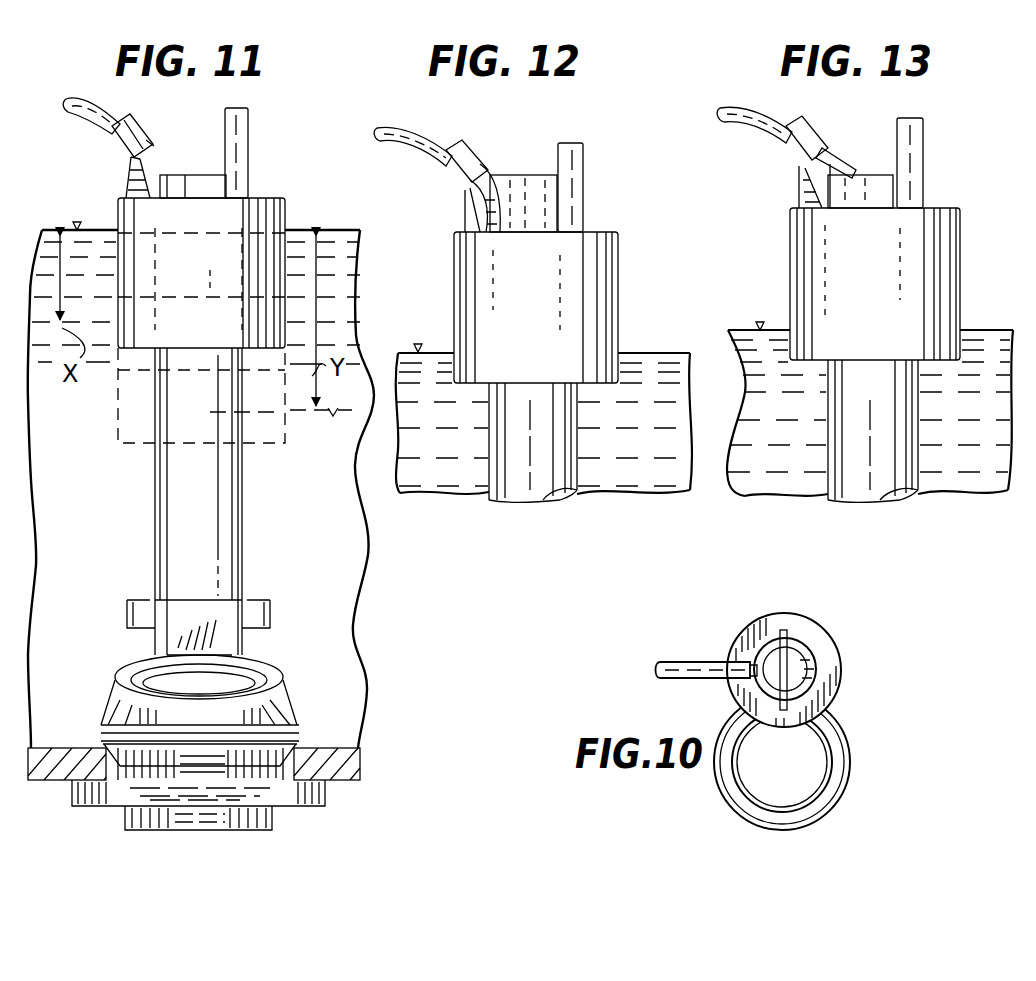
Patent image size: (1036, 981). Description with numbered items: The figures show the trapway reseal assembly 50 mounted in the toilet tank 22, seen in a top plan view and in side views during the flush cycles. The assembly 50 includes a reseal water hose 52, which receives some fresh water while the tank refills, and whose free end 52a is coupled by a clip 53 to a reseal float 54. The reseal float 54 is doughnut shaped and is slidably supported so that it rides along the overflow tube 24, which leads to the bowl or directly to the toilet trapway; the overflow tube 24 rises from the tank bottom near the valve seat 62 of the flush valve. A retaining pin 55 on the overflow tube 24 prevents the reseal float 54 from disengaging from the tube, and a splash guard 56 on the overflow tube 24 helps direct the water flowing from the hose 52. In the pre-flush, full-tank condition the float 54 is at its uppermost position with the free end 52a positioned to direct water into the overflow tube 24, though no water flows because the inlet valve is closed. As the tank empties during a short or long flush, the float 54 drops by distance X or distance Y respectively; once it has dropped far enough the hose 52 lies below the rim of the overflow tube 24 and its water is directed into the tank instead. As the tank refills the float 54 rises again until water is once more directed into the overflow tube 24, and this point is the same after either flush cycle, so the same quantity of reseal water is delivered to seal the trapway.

In FIG. 11, the toilet tank 22 is at (350, 768).
In FIG. 11, the overflow tube 24 is at (232, 512).
In FIG. 12, the overflow tube 24 is at (560, 502).
In FIG. 13, the overflow tube 24 is at (900, 500).
In FIG. 10, the trapway reseal assembly 50 is at (714, 648).
In FIG. 11, the reseal water hose 52 is at (118, 112).
In FIG. 12, the reseal water hose 52 is at (425, 146).
In FIG. 13, the reseal water hose 52 is at (772, 123).
In FIG. 10, the reseal water hose 52 is at (690, 690).
In FIG. 11, the free end 52a is at (150, 135).
In FIG. 11, the clip 53 is at (118, 152).
In FIG. 11, the reseal float 54 is at (286, 212).
In FIG. 12, the reseal float 54 is at (618, 296).
In FIG. 13, the reseal float 54 is at (960, 290).
In FIG. 10, the reseal float 54 is at (836, 688).
In FIG. 10, the retaining pin 55 is at (790, 630).
In FIG. 10, the splash guard 56 is at (812, 658).
In FIG. 11, the valve seat 62 is at (270, 662).
In FIG. 10, the valve seat 62 is at (848, 762).